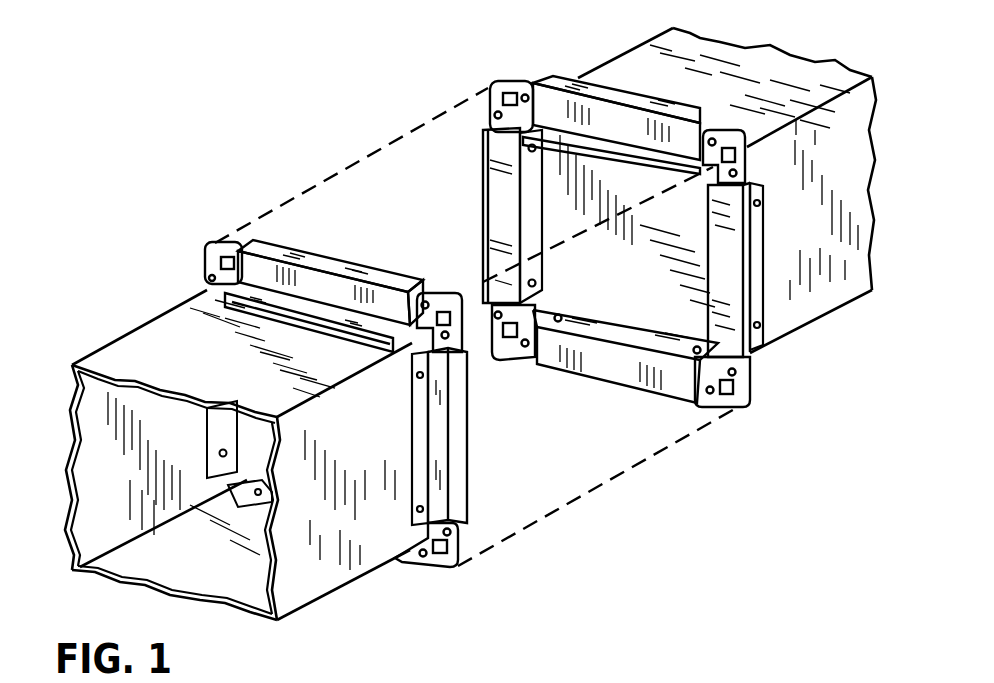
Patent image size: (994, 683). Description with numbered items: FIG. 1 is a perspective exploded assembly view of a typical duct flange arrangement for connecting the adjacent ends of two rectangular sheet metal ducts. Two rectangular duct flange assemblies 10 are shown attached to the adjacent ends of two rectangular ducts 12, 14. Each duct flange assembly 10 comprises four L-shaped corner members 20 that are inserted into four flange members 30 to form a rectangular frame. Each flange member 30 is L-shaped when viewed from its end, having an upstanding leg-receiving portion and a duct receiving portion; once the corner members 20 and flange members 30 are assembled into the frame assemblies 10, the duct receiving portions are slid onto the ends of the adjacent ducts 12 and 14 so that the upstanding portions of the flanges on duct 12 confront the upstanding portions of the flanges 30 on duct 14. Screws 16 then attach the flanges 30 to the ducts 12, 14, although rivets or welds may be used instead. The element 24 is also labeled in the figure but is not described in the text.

The rectangular duct flange assembly 10 is at (662, 412).
The rectangular duct 12 is at (105, 355).
The rectangular duct 14 is at (768, 62).
The screws 16 is at (530, 148).
The L-shaped corner member 20 is at (499, 82).
The flange 24 is at (578, 682).
The flange member 30 is at (560, 74).